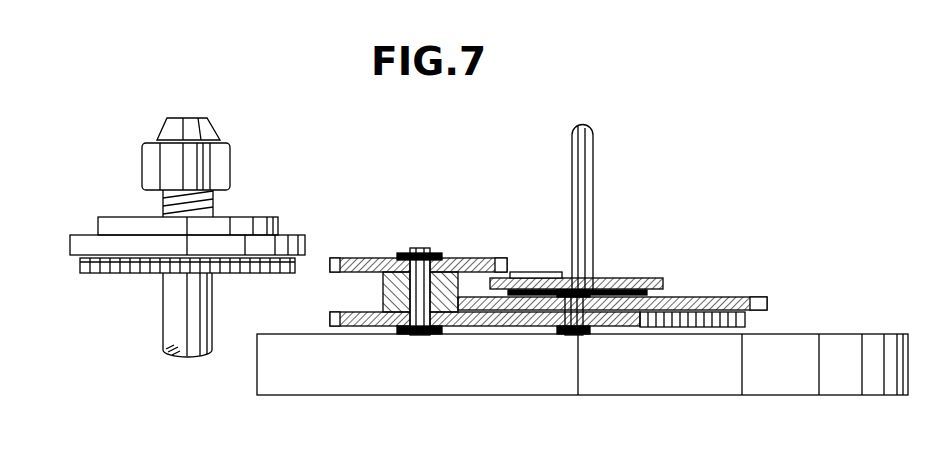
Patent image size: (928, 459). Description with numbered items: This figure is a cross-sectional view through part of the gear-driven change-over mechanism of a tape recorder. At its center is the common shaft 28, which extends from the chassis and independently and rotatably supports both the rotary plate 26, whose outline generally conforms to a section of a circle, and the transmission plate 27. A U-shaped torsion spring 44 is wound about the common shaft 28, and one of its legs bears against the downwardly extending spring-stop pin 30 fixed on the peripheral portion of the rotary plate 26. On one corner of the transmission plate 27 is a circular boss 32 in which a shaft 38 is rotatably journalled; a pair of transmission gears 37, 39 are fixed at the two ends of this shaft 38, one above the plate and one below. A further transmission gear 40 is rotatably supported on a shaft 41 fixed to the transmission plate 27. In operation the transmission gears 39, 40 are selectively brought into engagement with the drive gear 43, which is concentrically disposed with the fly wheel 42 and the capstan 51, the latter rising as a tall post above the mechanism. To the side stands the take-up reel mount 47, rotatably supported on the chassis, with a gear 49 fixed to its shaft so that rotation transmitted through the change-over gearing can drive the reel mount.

The rotary plate 26 is at (620, 279).
The transmission plate 27 is at (762, 297).
The common shaft 28 is at (537, 272).
The spring-stop pin 30 is at (660, 288).
The circular boss 32 is at (477, 262).
The transmission gear 37 is at (352, 258).
The shaft 38 is at (435, 253).
The transmission gear 39 is at (362, 313).
The transmission gear 40 is at (538, 327).
The shaft 41 is at (595, 333).
The fly wheel 42 is at (407, 380).
The drive gear 43 is at (727, 327).
The U-shaped torsion spring 44 is at (677, 297).
The take-up reel mount 47 is at (103, 228).
The gear 49 is at (93, 275).
The capstan 51 is at (588, 227).